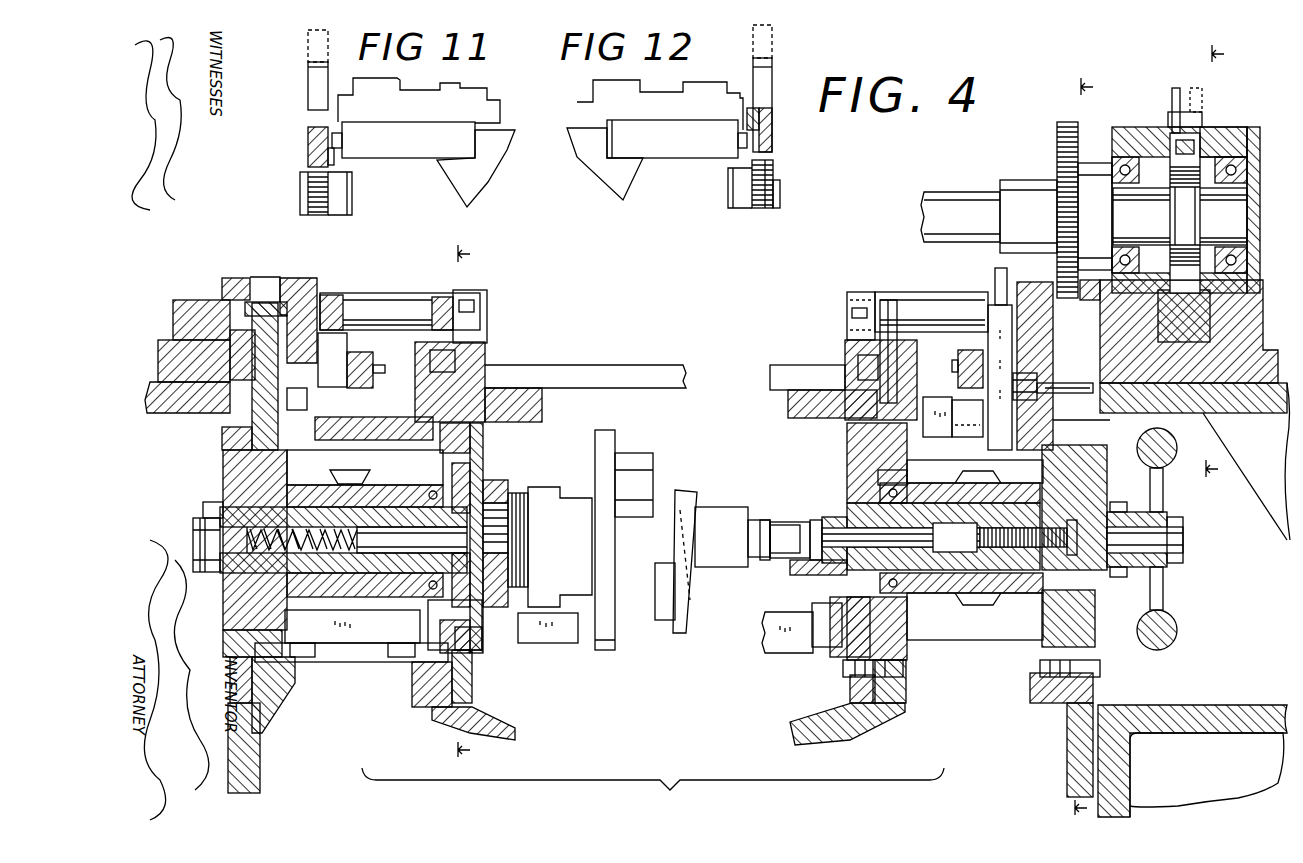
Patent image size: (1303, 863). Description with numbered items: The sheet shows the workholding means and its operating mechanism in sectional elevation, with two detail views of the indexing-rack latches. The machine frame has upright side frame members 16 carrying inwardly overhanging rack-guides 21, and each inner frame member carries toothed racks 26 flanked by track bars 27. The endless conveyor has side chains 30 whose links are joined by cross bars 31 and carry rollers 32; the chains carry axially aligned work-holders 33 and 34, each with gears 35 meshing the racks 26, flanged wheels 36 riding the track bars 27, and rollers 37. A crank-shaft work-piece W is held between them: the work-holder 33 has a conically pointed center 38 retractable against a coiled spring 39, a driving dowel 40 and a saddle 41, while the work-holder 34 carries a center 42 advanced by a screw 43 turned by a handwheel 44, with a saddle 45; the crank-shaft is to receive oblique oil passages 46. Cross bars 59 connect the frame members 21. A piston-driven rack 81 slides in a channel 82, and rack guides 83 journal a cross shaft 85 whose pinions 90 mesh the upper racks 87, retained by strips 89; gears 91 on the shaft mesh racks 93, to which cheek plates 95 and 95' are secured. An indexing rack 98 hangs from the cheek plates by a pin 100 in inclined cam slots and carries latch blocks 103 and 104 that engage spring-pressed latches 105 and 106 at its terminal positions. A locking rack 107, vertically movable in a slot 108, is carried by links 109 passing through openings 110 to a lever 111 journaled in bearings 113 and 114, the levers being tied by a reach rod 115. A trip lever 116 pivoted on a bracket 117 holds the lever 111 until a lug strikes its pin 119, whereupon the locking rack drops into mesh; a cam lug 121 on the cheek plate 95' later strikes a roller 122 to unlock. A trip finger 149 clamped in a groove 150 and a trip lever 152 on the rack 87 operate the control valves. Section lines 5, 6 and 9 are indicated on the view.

In FIG. 11, the side frame member 16 is at (498, 155).
In FIG. 12, the side frame member 16 is at (592, 142).
In FIG. 4, the side frame member 16 is at (155, 415).
In FIG. 11, the rack-guide 21 is at (486, 104).
In FIG. 12, the rack-guide 21 is at (590, 100).
In FIG. 4, the rack-guide 21 is at (160, 357).
In FIG. 4, the toothed rack 26 is at (270, 690).
In FIG. 4, the track bar 27 is at (473, 688).
In FIG. 4, the side chain 30 is at (322, 486).
In FIG. 4, the cross bar 31 is at (362, 655).
In FIG. 4, the roller 32 is at (348, 485).
In FIG. 4, the work-holder 33 is at (222, 472).
In FIG. 11, the work-holder 34 is at (340, 195).
In FIG. 12, the work-holder 34 is at (745, 198).
In FIG. 4, the work-holder 34 is at (845, 455).
In FIG. 11, the gear 35 is at (303, 196).
In FIG. 12, the gear 35 is at (780, 196).
In FIG. 4, the gear 35 is at (905, 648).
In FIG. 4, the flanged wheel 36 is at (225, 635).
In FIG. 4, the roller 37 is at (195, 520).
In FIG. 4, the center 38 is at (415, 532).
In FIG. 4, the coiled spring 39 is at (300, 527).
In FIG. 4, the driving dowel 40 is at (482, 490).
In FIG. 4, the saddle 41 is at (548, 600).
In FIG. 4, the center 42 is at (840, 520).
In FIG. 4, the screw 43 is at (1018, 600).
In FIG. 4, the handwheel 44 is at (1165, 588).
In FIG. 4, the saddle 45 is at (805, 575).
In FIG. 4, the oil passage 46 is at (690, 590).
In FIG. 4, the cross bar 59 is at (598, 372).
In FIG. 4, the rack 81 is at (1195, 322).
In FIG. 11, the channel 82 is at (410, 88).
In FIG. 12, the channel 82 is at (650, 92).
In FIG. 4, the channel 82 is at (173, 310).
In FIG. 4, the rack guide 83 is at (1252, 127).
In FIG. 4, the cross shaft 85 is at (952, 192).
In FIG. 4, the upper rack 87 is at (1222, 127).
In FIG. 4, the strip 89 is at (1128, 127).
In FIG. 4, the pinion 90 is at (1168, 222).
In FIG. 11, the gear 91 is at (308, 46).
In FIG. 12, the gear 91 is at (772, 42).
In FIG. 4, the gear 91 is at (1057, 138).
In FIG. 11, the rack 93 is at (312, 88).
In FIG. 12, the rack 93 is at (768, 90).
In FIG. 4, the rack 93 is at (1020, 290).
In FIG. 4, the cheek plate 95 is at (230, 309).
In FIG. 4, the cheek plate 95' is at (264, 277).
In FIG. 11, the indexing rack 98 is at (310, 134).
In FIG. 12, the indexing rack 98 is at (770, 138).
In FIG. 4, the indexing rack 98 is at (260, 395).
In FIG. 4, the pin 100 is at (1100, 420).
In FIG. 11, the latch block 103 is at (328, 156).
In FIG. 12, the latch block 104 is at (772, 126).
In FIG. 11, the latch 105 is at (405, 145).
In FIG. 12, the latch 106 is at (712, 146).
In FIG. 4, the locking rack 107 is at (470, 385).
In FIG. 4, the slot 108 is at (460, 360).
In FIG. 4, the link 109 is at (885, 335).
In FIG. 4, the opening 110 is at (855, 355).
In FIG. 4, the lever 111 is at (385, 292).
In FIG. 4, the bearing 113 is at (472, 292).
In FIG. 4, the bearing 114 is at (296, 280).
In FIG. 4, the reach rod 115 is at (362, 390).
In FIG. 4, the trip lever 116 is at (968, 440).
In FIG. 4, the bracket 117 is at (940, 438).
In FIG. 4, the pin 119 is at (1022, 400).
In FIG. 4, the cam lug 121 is at (296, 410).
In FIG. 4, the roller 122 is at (1040, 395).
In FIG. 4, the trip finger 149 is at (1172, 90).
In FIG. 4, the clamping groove 150 is at (1170, 127).
In FIG. 4, the trip lever 152 is at (1205, 90).
In FIG. 4, the work-piece W is at (604, 640).
In FIG. 4, the section line 5- 5 is at (1211, 261).
In FIG. 4, the section line 6- 6 is at (1078, 446).
In FIG. 4, the section line 9- 9 is at (653, 510).